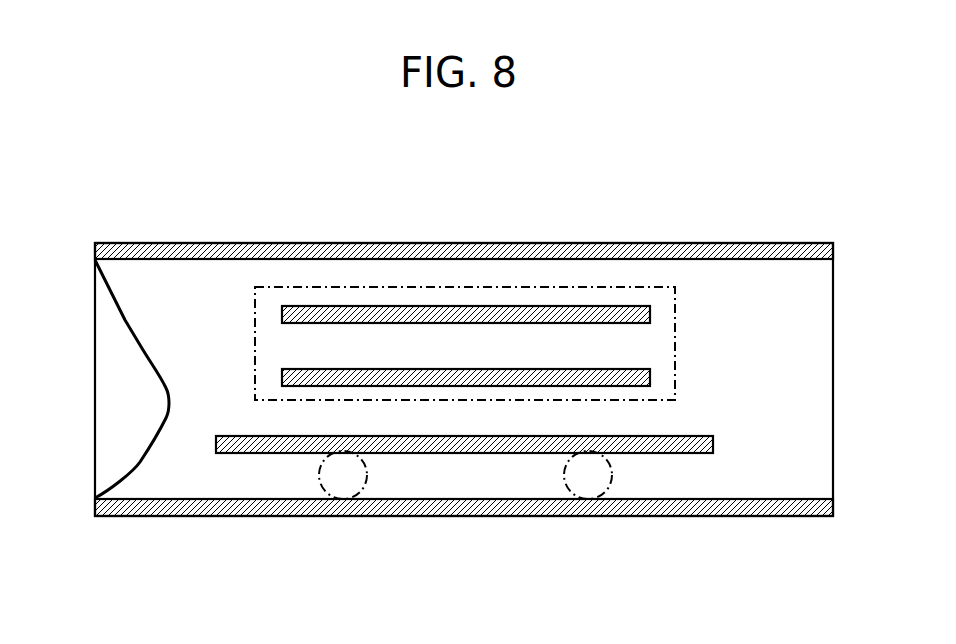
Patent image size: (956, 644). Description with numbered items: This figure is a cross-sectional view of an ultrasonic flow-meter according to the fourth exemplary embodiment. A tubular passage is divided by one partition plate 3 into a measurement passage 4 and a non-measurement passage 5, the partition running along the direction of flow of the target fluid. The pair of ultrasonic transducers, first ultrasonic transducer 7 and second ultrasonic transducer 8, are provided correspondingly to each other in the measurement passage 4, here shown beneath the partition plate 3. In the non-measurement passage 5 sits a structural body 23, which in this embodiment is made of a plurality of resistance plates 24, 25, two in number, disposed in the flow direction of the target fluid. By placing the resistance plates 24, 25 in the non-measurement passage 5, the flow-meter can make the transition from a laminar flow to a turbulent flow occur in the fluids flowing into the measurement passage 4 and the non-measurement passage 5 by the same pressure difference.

The partition plate 3 is at (483, 442).
The measurement passage 4 is at (683, 467).
The non-measurement passage 5 is at (697, 338).
The first ultrasonic transducer 7 is at (342, 480).
The second ultrasonic transducer 8 is at (592, 480).
The structural body 23 is at (465, 286).
The resistance plate 24 is at (560, 306).
The resistance plate 25 is at (626, 370).